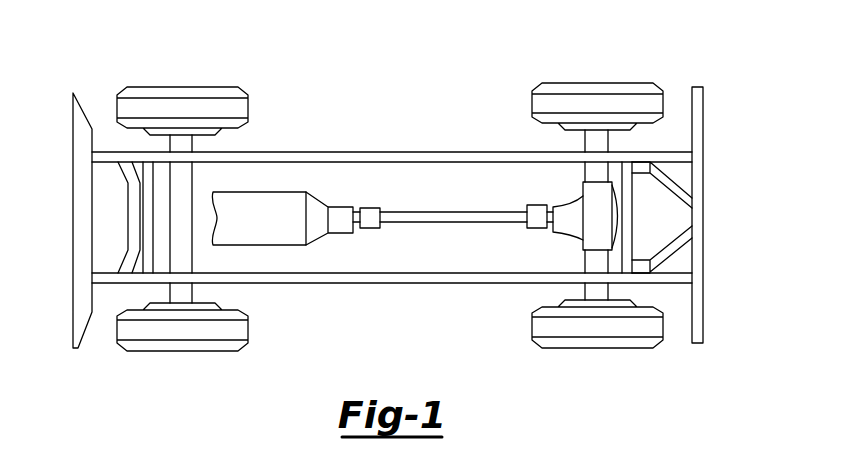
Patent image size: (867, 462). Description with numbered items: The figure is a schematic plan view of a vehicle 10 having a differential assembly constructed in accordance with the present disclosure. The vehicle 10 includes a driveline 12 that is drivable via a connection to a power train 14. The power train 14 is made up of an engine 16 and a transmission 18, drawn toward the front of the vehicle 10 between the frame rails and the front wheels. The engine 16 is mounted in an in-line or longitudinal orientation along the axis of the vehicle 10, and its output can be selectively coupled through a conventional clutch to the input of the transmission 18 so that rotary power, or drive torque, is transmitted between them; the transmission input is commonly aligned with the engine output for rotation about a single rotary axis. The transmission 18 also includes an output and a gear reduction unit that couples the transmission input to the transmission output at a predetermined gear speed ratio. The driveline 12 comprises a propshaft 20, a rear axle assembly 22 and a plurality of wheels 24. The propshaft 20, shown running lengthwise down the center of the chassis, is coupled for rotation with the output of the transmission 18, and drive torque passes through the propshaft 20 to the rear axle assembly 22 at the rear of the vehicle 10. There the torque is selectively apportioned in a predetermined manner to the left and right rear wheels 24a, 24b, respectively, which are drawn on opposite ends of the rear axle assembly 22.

The vehicle 10 is at (345, 94).
The driveline 12 is at (548, 198).
The power train 14 is at (286, 254).
The engine 16 is at (267, 230).
The transmission 18 is at (338, 213).
The propshaft 20 is at (452, 212).
The rear axle assembly 22 is at (574, 242).
The wheels 24 is at (606, 191).
The left rear wheel 24a is at (545, 323).
The right rear wheel 24b is at (632, 87).